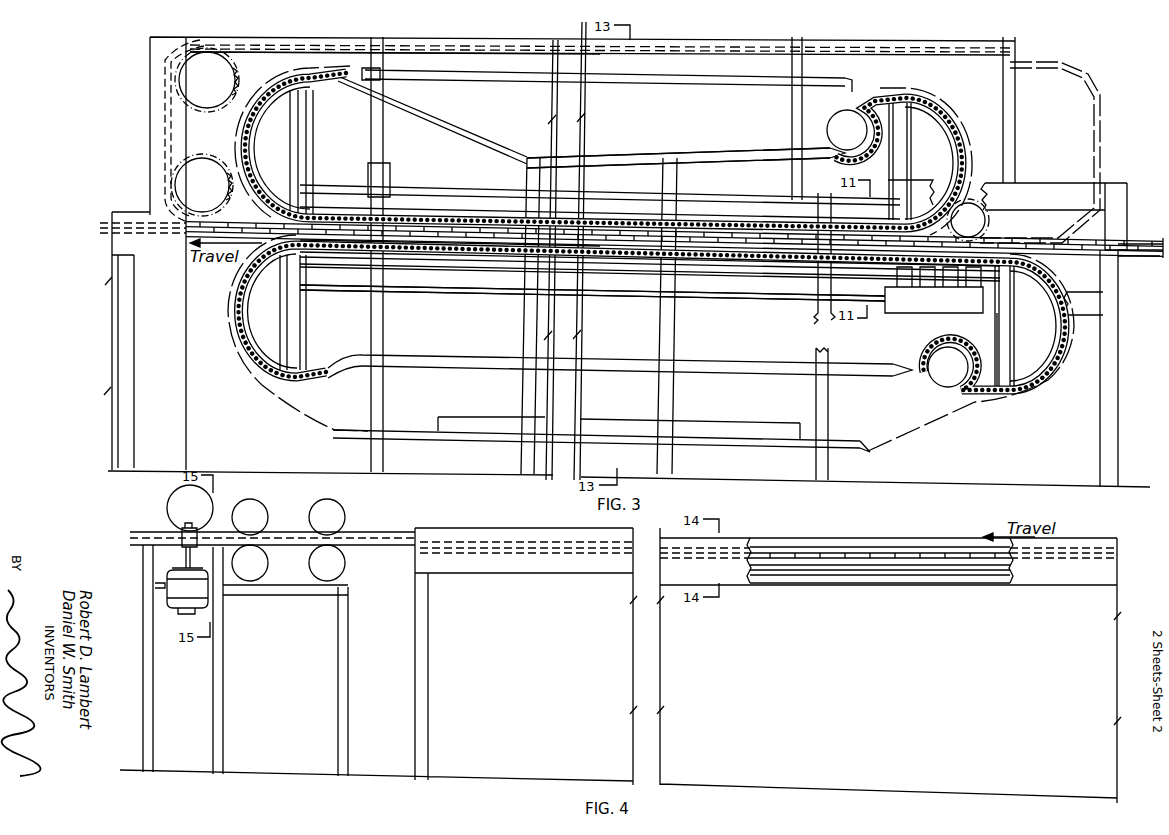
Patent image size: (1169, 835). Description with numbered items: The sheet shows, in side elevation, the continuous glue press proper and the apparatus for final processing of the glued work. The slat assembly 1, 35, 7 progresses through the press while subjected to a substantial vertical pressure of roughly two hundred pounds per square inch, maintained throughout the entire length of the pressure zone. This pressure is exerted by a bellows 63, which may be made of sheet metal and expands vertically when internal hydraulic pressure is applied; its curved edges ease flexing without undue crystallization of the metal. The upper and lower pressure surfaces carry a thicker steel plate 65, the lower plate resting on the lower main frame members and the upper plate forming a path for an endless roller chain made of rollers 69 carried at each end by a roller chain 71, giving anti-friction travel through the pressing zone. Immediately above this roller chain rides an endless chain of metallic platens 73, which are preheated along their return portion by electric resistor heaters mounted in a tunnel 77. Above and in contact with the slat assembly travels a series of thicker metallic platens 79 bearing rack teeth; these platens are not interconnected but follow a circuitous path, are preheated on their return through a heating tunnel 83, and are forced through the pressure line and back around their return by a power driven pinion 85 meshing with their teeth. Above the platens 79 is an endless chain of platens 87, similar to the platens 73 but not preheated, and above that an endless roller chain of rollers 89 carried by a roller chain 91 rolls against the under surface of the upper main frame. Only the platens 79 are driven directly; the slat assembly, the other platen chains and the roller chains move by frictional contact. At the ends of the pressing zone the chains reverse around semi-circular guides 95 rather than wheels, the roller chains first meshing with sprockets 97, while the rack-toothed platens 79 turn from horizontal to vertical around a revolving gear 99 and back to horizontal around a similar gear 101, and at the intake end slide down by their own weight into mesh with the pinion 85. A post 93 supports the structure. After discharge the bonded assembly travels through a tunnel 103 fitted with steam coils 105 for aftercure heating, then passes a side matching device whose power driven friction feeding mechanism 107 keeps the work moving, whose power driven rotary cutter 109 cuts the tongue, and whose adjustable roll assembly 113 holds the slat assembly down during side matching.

In FIG. 3, the slat assembly 1 is at (1152, 247).
In FIG. 4, the slat assembly 1 is at (908, 553).
In FIG. 3, the slat assembly 7 is at (1153, 262).
In FIG. 4, the slat assembly 7 is at (912, 561).
In FIG. 3, the slat assembly 35 is at (1090, 255).
In FIG. 4, the slat assembly 35 is at (818, 552).
In FIG. 3, the bellows 63 is at (430, 259).
In FIG. 3, the steel plate 65 is at (495, 273).
In FIG. 3, the rollers 69 is at (291, 382).
In FIG. 3, the roller chain 71 is at (291, 382).
In FIG. 3, the metallic platens 73 is at (328, 427).
In FIG. 3, the tunnel 77 is at (603, 418).
In FIG. 3, the thicker metallic platens 79 is at (166, 76).
In FIG. 3, the heating tunnel 83 is at (284, 52).
In FIG. 3, the power driven pinion 85 is at (963, 207).
In FIG. 3, the platens 87 is at (342, 72).
In FIG. 3, the rollers 89 is at (755, 227).
In FIG. 3, the roller chain 91 is at (755, 227).
In FIG. 3, the support post 93 is at (808, 223).
In FIG. 3, the semi-circular guides 95 is at (255, 128).
In FIG. 3, the sprockets 97 is at (838, 112).
In FIG. 3, the revolving gear 99 is at (201, 192).
In FIG. 3, the gear 101 is at (203, 77).
In FIG. 4, the tunnel 103 is at (1068, 590).
In FIG. 4, the steam coils 105 is at (987, 580).
In FIG. 4, the power driven friction feeding mechanism 107 is at (263, 510).
In FIG. 4, the power driven rotary cutter 109 is at (178, 548).
In FIG. 4, the adjustable roll assembly 113 is at (170, 503).